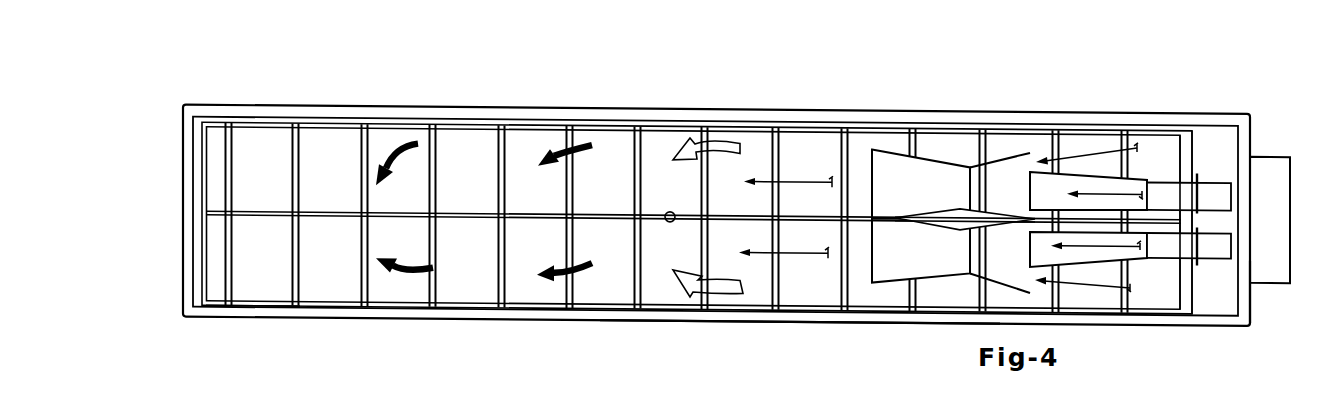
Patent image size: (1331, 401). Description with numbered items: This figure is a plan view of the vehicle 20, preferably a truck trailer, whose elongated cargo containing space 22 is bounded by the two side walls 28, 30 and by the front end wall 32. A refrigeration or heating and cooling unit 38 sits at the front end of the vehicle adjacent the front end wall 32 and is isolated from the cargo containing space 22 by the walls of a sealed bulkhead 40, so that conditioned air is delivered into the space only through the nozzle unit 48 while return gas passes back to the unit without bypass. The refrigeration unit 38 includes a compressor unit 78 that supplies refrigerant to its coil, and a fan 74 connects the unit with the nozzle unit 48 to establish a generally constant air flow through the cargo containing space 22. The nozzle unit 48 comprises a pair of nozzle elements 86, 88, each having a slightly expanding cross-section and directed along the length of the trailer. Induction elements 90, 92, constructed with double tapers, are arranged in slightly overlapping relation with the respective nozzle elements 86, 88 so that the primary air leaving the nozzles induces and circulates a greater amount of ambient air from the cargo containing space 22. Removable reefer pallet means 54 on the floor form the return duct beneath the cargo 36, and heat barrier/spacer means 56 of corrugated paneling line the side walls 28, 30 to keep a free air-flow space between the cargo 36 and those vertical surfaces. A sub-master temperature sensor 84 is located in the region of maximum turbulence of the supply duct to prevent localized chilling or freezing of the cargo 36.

The vehicle 20 is at (1148, 105).
The cargo containing space 22 is at (605, 160).
The side wall 28 is at (838, 118).
The side wall 30 is at (778, 318).
The front end wall 32 is at (1250, 292).
The cargo 36 is at (677, 259).
The refrigeration unit 38 is at (1270, 146).
The bulkhead 40 is at (1177, 272).
The nozzle unit 48 is at (1093, 150).
The reefer pallet means 54 is at (247, 302).
The heat barrier/spacer means 56 is at (672, 119).
The fan 74 is at (1212, 254).
The compressor unit 78 is at (1270, 197).
The sub-master temperature sensor 84 is at (680, 203).
The nozzle element 86 is at (1063, 186).
The nozzle element 88 is at (1062, 258).
The induction element 90 is at (913, 194).
The induction element 92 is at (913, 252).